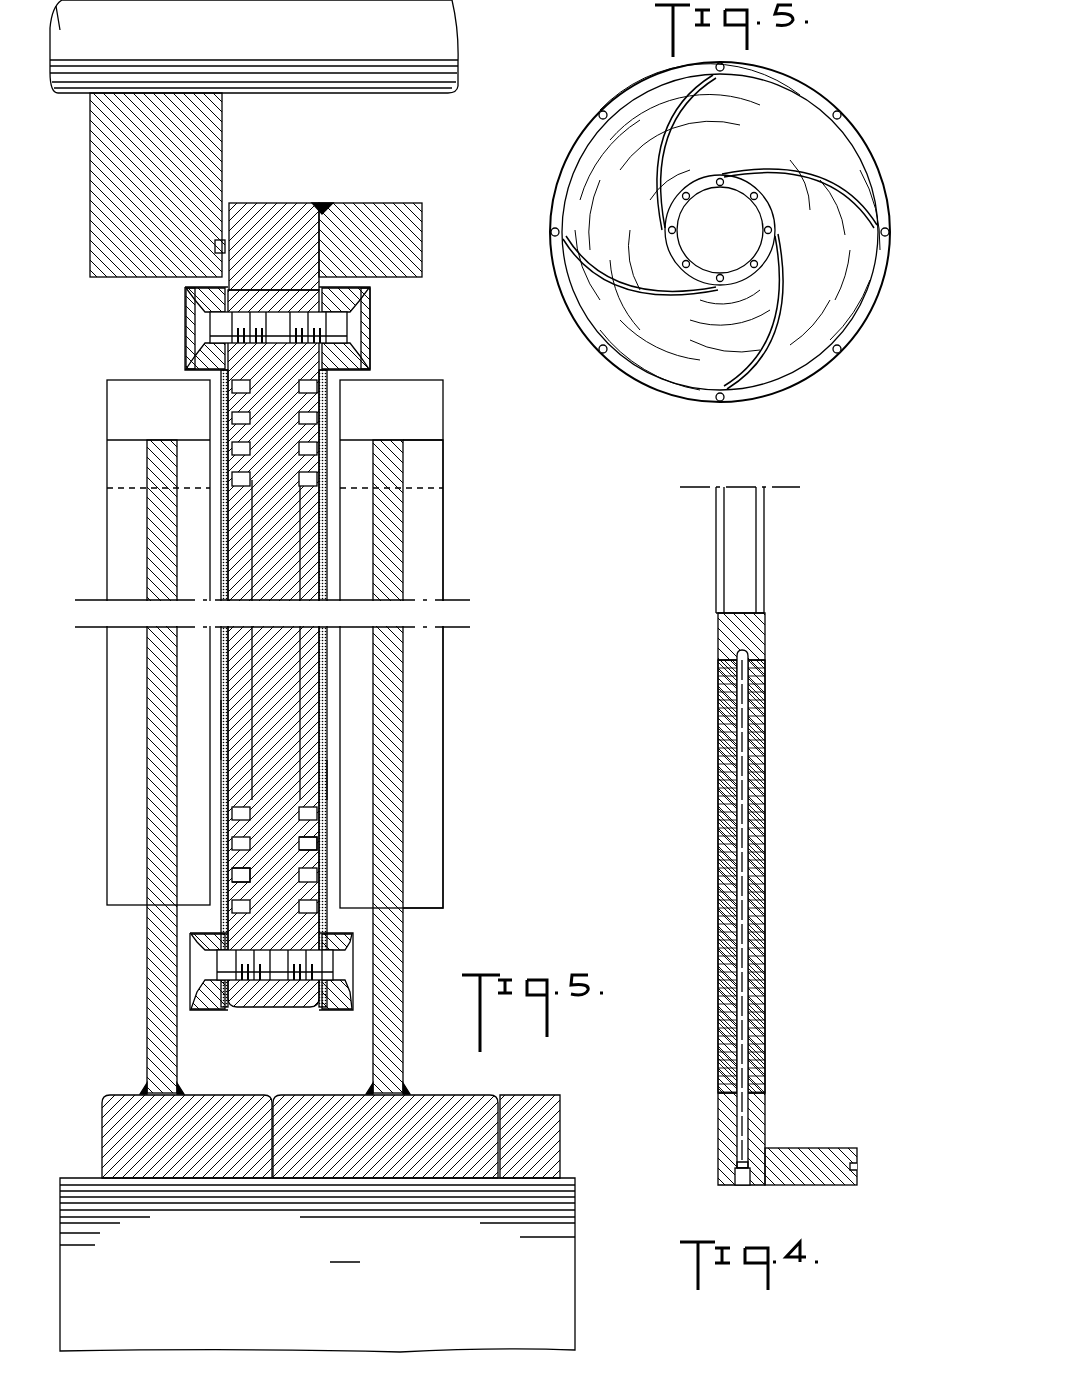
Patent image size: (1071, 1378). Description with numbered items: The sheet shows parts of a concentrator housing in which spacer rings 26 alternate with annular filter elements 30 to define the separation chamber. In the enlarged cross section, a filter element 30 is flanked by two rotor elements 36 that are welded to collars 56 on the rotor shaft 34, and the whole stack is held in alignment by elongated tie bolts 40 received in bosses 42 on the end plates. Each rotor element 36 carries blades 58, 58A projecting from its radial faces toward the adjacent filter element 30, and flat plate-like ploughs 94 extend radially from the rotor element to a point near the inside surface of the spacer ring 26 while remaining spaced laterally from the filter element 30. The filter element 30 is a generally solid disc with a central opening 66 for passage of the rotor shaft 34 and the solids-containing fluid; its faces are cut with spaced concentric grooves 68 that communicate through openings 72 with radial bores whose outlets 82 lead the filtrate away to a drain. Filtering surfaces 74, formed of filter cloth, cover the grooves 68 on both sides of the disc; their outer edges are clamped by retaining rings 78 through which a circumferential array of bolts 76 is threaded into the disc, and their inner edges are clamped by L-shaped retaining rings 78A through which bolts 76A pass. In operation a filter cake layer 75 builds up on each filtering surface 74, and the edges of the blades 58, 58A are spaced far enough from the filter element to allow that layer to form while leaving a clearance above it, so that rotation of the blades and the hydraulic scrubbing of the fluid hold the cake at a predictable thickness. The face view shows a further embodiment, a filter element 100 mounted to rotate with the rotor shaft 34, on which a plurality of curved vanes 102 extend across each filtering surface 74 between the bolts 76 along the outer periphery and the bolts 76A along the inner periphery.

In FIG. 5, the spacer ring 26 is at (378, 213).
In FIG. 4, the spacer ring 26 is at (815, 1158).
In FIG. 5, the filter element 30 is at (290, 685).
In FIG. 4, the filter element 30 is at (801, 677).
In FIG. 5, the rotor shaft 34 is at (325, 1295).
In FIG. 5, the rotor element 36 is at (147, 510).
In FIG. 5, the bolt 40 is at (292, 80).
In FIG. 5, the boss 42 is at (205, 146).
In FIG. 5, the collar 56 is at (440, 1094).
In FIG. 5, the blade 58 is at (357, 526).
In FIG. 5, the blade 58A is at (420, 550).
In FIG. 4, the opening 66 is at (745, 573).
In FIG. 5, the concentric groove 68 is at (236, 813).
In FIG. 4, the concentric groove 68 is at (766, 737).
In FIG. 4, the opening 72 is at (728, 692).
In FIG. 5, the filtering surface 74 is at (320, 855).
In FIG. 6, the filtering surface 74 is at (857, 200).
In FIG. 5, the filter cake layer 75 is at (223, 733).
In FIG. 5, the bolt 76 is at (254, 348).
In FIG. 6, the bolt 76 is at (889, 233).
In FIG. 5, the bolt 76A is at (236, 1012).
In FIG. 6, the bolt 76A is at (764, 231).
In FIG. 5, the retaining ring 78 is at (192, 296).
In FIG. 5, the retaining ring 78A is at (292, 1012).
In FIG. 4, the outlet 82 is at (738, 1186).
In FIG. 5, the plough 94 is at (118, 382).
In FIG. 6, the filter element 100 is at (810, 86).
In FIG. 6, the vane 102 is at (818, 184).